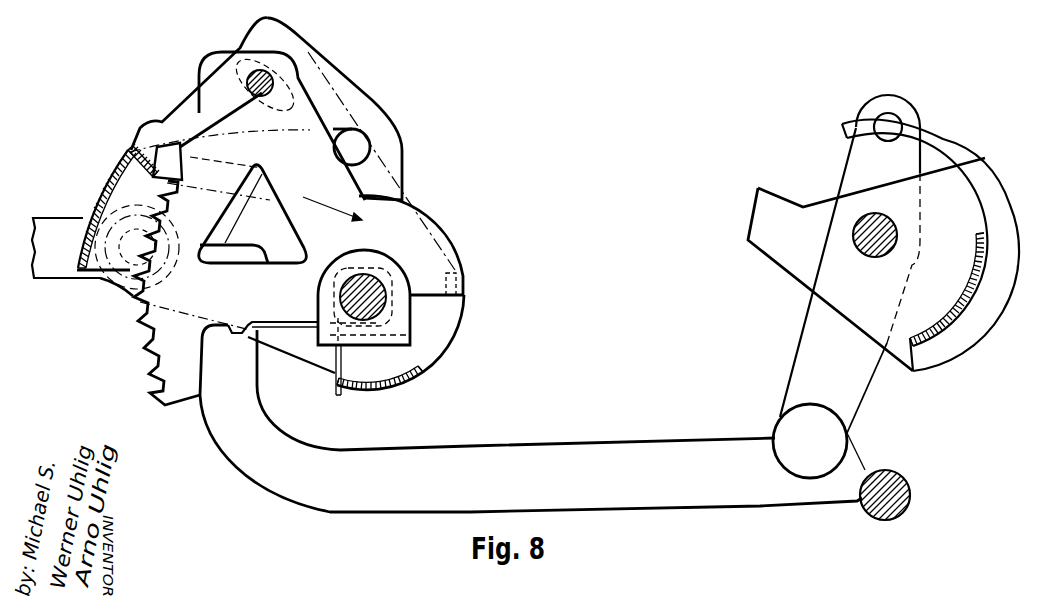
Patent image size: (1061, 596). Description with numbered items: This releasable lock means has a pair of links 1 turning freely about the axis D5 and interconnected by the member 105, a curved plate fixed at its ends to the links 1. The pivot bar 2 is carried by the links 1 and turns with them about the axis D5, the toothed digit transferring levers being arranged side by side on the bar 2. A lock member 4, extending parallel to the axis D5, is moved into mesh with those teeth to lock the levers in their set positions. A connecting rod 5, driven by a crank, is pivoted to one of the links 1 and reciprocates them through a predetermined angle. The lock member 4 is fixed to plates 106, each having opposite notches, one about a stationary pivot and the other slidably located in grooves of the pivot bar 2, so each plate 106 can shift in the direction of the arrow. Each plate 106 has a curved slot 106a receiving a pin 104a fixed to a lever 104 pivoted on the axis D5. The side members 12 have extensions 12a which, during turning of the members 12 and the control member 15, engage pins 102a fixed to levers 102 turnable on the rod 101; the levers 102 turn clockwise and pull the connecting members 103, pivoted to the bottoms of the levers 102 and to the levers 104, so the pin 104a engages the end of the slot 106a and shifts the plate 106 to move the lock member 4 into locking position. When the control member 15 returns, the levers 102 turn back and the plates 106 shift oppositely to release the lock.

The axis D5 is at (248, 78).
The curved slot 106a is at (157, 147).
The lock member 4 is at (100, 182).
The connecting rod 5 is at (71, 271).
The lever 104 is at (248, 176).
The pin 104a is at (353, 147).
The plate 106 is at (392, 173).
The pivot bar 2 is at (380, 286).
The member 105 is at (425, 365).
The link 1 is at (303, 352).
The connecting member 103 is at (483, 455).
The pin 102a is at (890, 117).
The rod 101 is at (862, 226).
The extension 12a is at (757, 217).
The side member 12 is at (1003, 265).
The control member 15 is at (972, 310).
The lever 102 is at (867, 373).